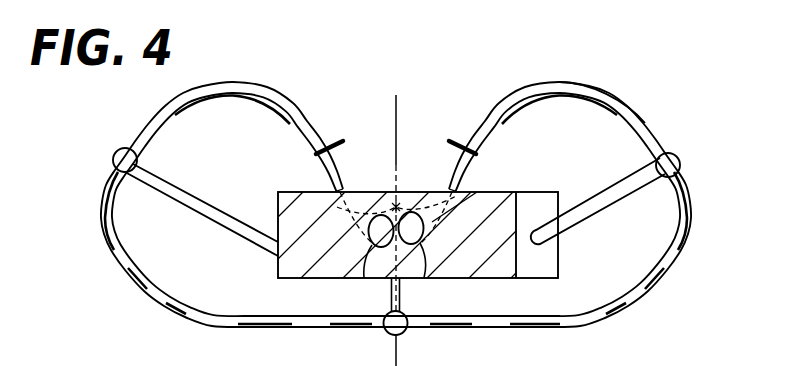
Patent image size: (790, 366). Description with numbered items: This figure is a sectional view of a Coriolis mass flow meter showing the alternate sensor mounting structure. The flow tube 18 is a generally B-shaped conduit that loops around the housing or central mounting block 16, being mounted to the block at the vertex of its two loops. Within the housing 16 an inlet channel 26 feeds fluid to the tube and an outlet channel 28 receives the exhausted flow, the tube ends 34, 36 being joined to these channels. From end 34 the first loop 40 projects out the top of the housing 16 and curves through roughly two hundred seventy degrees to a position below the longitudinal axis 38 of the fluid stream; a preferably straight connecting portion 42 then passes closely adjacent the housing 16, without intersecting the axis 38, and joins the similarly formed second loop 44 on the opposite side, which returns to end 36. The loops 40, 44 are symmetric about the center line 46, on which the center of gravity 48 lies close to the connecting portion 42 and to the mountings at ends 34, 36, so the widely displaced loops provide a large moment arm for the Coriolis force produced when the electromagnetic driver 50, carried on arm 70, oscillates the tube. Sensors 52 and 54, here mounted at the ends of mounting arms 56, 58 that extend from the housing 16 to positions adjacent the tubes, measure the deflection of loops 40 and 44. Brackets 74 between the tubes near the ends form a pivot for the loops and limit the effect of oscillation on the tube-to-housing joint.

The housing or central mounting block 16 is at (503, 272).
The flow tube 18 is at (660, 82).
The inlet channel 26 is at (477, 192).
The outlet channel 28 is at (370, 281).
The flow tube end 34 is at (463, 187).
The flow tube end 36 is at (345, 188).
The longitudinal axis 38 is at (418, 280).
The first loop 40 is at (606, 162).
The connecting portion 42 is at (478, 323).
The second loop 44 is at (240, 157).
The center line 46 is at (400, 117).
The center of gravity 48 is at (398, 204).
The electromagnetic driver 50 is at (390, 330).
The sensor 52 is at (670, 162).
The sensor 54 is at (123, 160).
The mounting arm 56 is at (608, 197).
The mounting arm 58 is at (172, 188).
The arm 70 is at (383, 300).
The bracket 74 is at (331, 137).